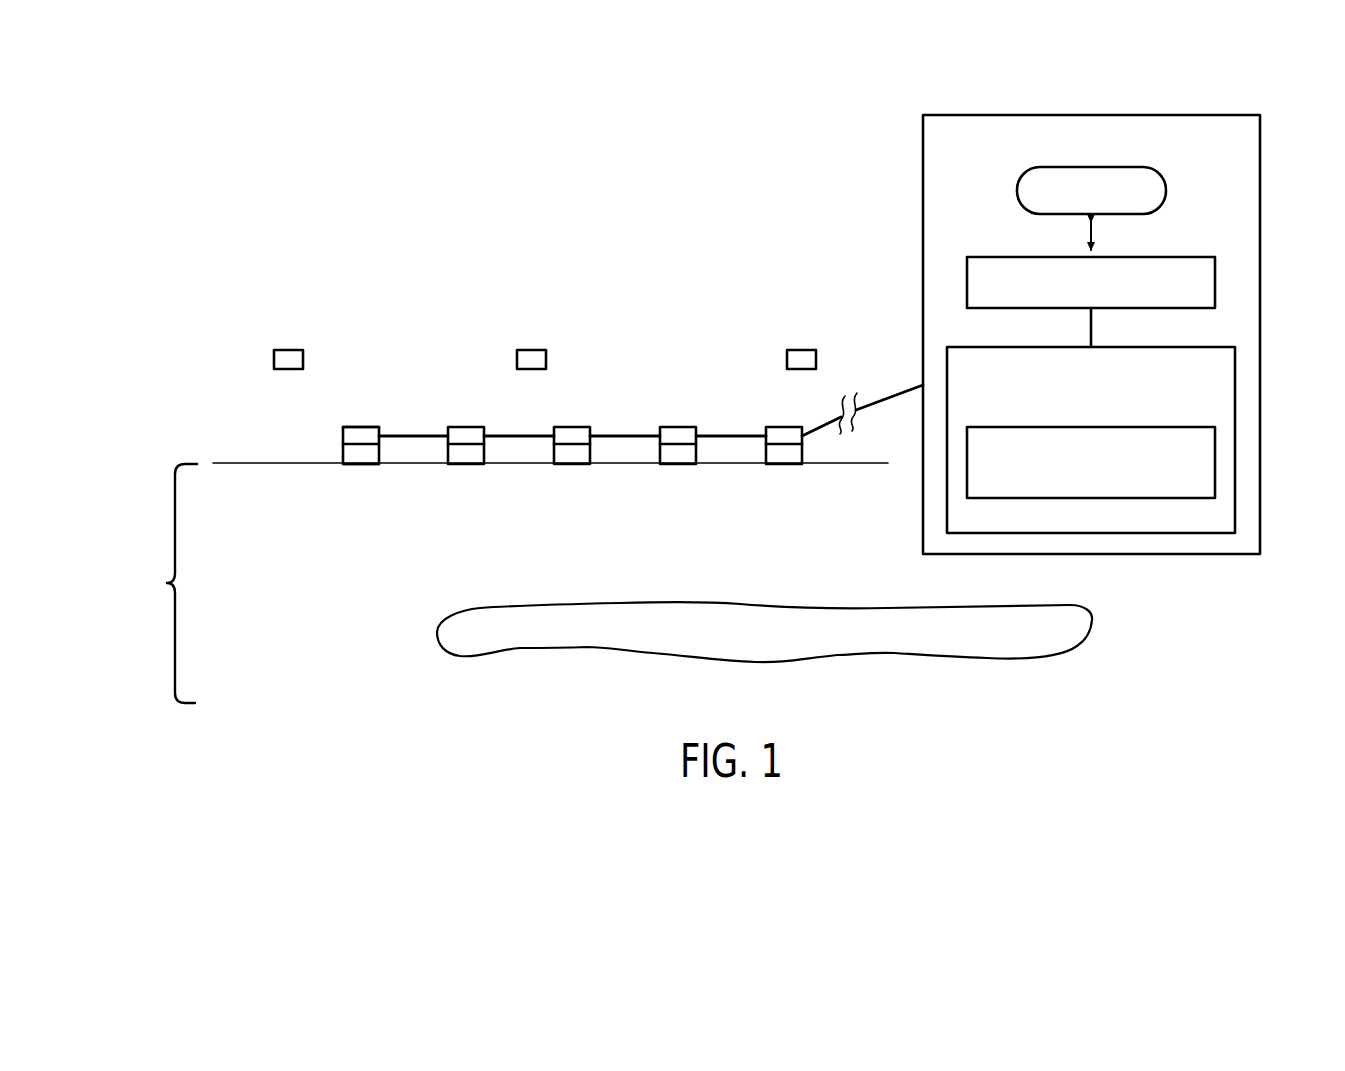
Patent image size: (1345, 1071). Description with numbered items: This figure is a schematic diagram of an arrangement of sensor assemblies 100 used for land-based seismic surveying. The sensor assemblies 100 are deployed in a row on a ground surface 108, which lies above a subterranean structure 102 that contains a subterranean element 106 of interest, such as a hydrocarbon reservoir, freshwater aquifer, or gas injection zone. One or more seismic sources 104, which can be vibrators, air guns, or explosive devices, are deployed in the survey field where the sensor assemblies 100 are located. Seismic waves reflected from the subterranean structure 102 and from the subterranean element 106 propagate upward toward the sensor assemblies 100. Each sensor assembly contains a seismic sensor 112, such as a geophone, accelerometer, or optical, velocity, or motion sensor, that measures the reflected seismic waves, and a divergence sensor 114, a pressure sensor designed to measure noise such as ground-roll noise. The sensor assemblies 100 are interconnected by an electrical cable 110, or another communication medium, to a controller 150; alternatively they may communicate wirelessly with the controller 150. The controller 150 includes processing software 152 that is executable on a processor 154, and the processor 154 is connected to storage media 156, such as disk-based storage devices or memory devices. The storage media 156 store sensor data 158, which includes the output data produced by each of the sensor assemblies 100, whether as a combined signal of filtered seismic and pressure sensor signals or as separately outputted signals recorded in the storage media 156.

The sensor assemblies 100 is at (465, 424).
The subterranean structure 102 is at (167, 583).
The seismic sources 104 is at (288, 350).
The subterranean element of interest 106 is at (770, 643).
The ground surface 108 is at (848, 463).
The electrical cable 110 is at (413, 436).
The seismic sensors 112 is at (343, 435).
The divergence sensors 114 is at (343, 455).
The controller 150 is at (1235, 115).
The processing software 152 is at (1166, 182).
The processor 154 is at (1200, 257).
The storage media 156 is at (1217, 347).
The sensor data 158 is at (1215, 462).